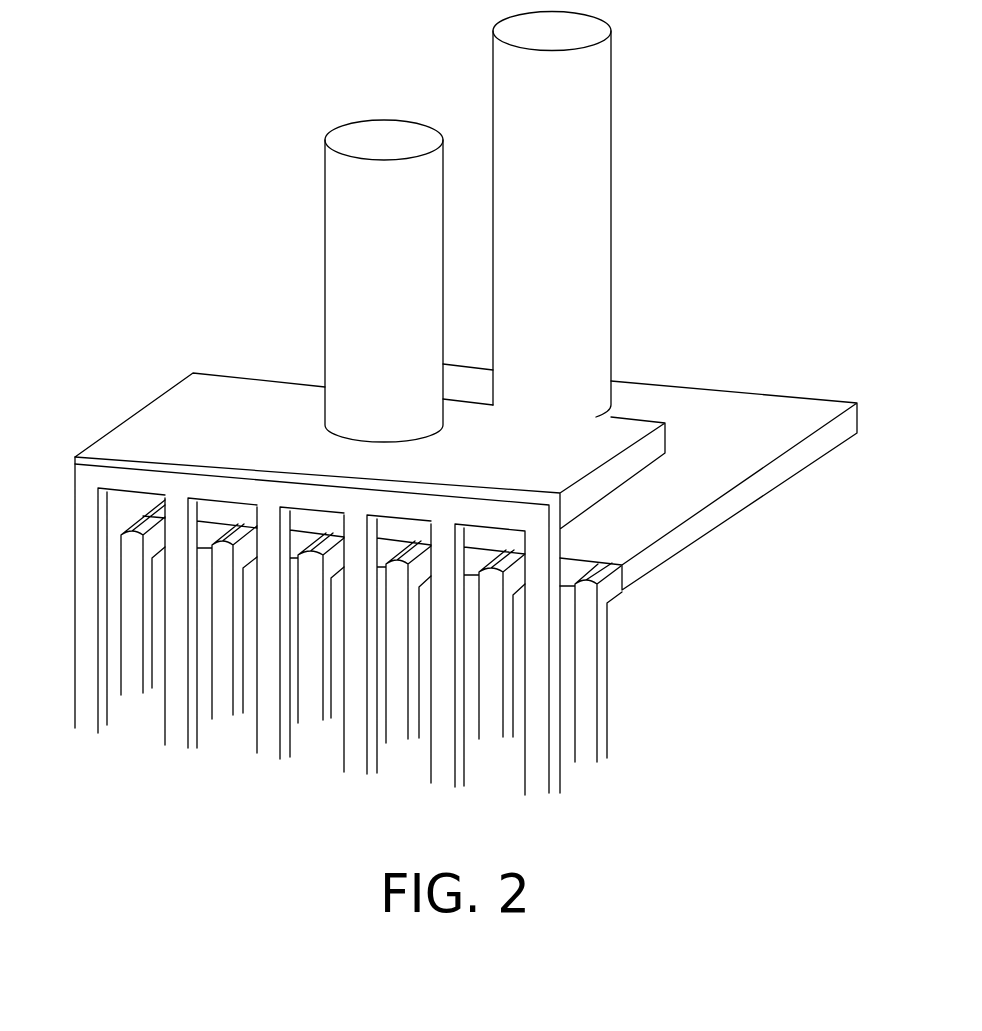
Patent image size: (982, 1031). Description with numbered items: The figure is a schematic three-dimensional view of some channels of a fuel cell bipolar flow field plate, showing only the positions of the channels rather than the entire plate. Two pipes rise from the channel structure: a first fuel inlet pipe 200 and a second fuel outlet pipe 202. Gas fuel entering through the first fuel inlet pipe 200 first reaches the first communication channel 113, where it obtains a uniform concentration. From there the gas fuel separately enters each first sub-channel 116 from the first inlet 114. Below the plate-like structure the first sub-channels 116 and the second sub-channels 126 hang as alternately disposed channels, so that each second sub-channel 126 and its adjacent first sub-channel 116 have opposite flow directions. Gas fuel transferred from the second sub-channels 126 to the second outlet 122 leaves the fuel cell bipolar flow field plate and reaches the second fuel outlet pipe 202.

The first communication channel 113 is at (217, 489).
The first inlet 114 is at (76, 471).
The first sub-channel 116 is at (76, 598).
The second outlet 122 is at (610, 593).
The second sub-channel 126 is at (603, 684).
The first fuel inlet pipe 200 is at (328, 228).
The second fuel outlet pipe 202 is at (604, 178).